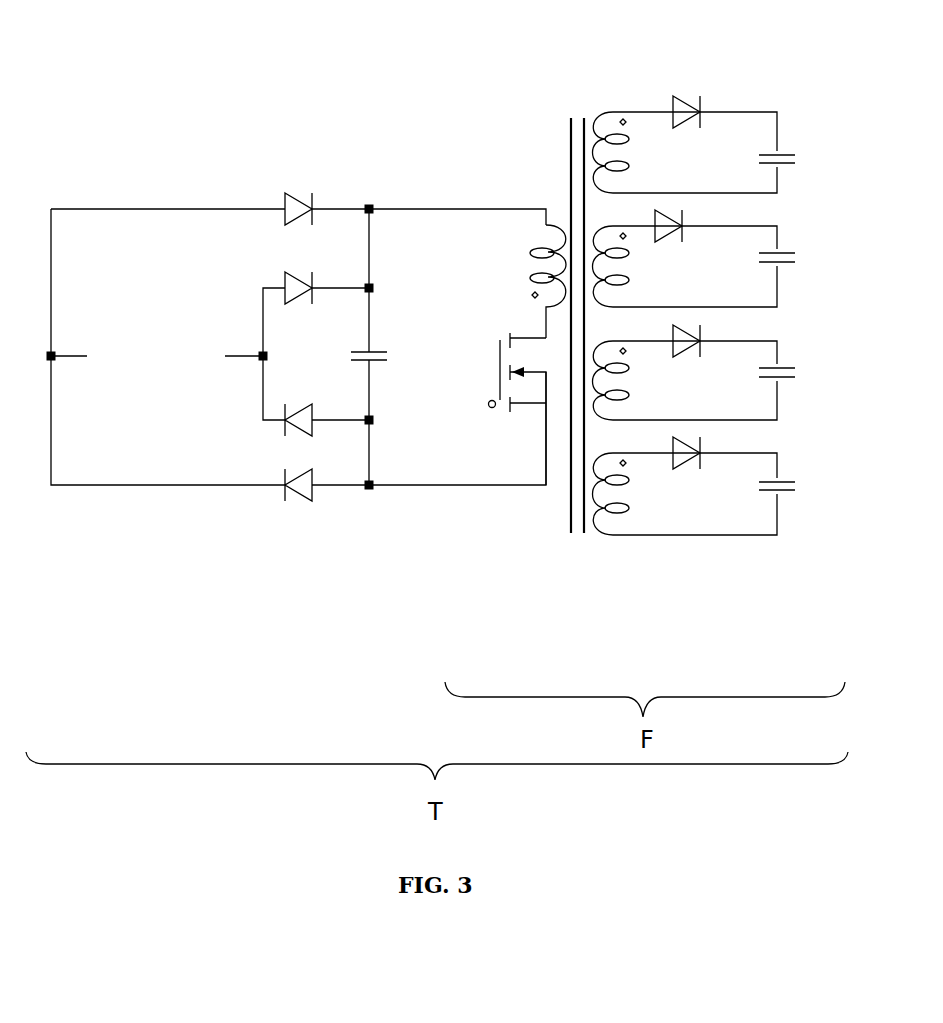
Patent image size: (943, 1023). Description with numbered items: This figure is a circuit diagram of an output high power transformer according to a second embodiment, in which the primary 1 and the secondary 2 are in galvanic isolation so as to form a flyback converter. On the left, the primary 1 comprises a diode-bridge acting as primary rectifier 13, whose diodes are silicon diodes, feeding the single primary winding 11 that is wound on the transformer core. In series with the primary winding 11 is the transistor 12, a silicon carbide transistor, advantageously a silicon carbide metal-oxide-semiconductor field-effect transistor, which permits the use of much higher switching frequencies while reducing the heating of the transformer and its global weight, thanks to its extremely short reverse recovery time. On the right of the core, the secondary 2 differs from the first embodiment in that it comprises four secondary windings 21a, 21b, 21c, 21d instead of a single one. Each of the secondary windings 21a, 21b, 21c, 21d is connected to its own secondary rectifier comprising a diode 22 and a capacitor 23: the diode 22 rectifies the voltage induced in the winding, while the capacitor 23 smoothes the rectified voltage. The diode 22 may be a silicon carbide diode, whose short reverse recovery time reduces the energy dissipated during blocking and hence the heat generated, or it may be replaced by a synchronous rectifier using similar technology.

The primary 1 is at (411, 184).
The primary winding 11 is at (537, 250).
The transistor 12 is at (527, 410).
The primary rectifier 13 is at (302, 516).
The secondary 2 is at (692, 572).
The secondary winding 21a is at (607, 535).
The secondary winding 21b is at (625, 368).
The secondary winding 21c is at (622, 252).
The secondary winding 21d is at (600, 118).
The diode 22 is at (675, 95).
The capacitor 23 is at (790, 155).